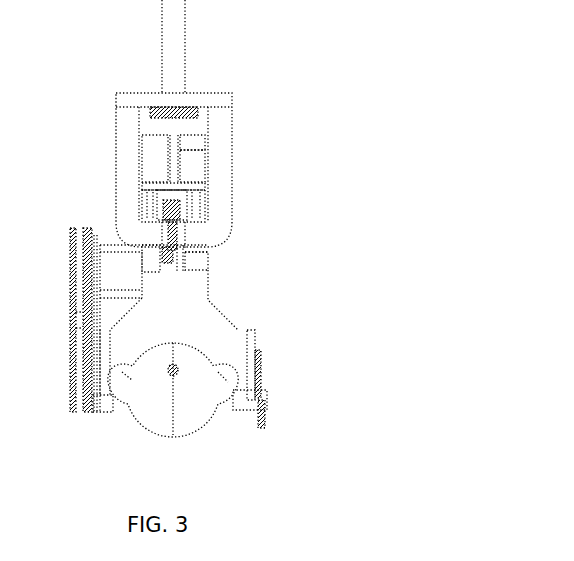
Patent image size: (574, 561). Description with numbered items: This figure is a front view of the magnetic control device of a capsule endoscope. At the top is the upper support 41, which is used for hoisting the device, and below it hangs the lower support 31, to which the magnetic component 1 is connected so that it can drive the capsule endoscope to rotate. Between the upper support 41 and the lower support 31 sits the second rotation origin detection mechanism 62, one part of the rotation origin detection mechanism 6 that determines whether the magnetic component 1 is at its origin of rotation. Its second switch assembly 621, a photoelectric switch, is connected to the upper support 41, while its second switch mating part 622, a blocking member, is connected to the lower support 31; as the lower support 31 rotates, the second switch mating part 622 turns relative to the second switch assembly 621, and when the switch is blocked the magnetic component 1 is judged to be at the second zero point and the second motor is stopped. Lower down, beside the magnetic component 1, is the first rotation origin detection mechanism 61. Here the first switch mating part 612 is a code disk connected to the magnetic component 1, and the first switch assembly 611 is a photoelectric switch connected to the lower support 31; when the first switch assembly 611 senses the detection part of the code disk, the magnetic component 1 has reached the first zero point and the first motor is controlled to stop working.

The magnetic component 1 is at (185, 427).
The rotation origin detection mechanism 6 is at (281, 332).
The lower support 31 is at (236, 329).
The upper support 41 is at (223, 168).
The first rotation origin detection mechanism 61 is at (326, 379).
The second rotation origin detection mechanism 62 is at (260, 262).
The first switch assembly 611 is at (270, 396).
The first switch mating part 612 is at (262, 364).
The second switch assembly 621 is at (180, 253).
The second switch mating part 622 is at (180, 278).